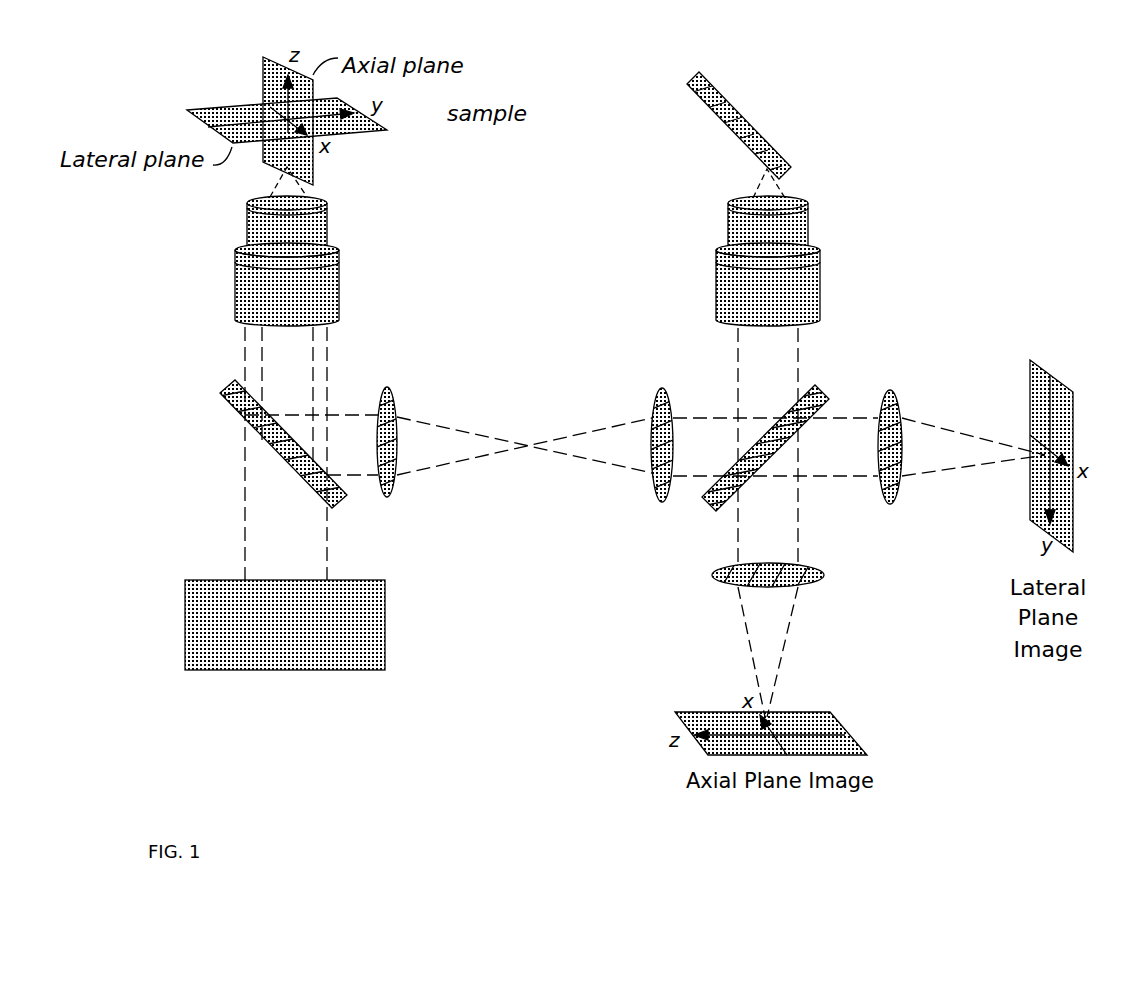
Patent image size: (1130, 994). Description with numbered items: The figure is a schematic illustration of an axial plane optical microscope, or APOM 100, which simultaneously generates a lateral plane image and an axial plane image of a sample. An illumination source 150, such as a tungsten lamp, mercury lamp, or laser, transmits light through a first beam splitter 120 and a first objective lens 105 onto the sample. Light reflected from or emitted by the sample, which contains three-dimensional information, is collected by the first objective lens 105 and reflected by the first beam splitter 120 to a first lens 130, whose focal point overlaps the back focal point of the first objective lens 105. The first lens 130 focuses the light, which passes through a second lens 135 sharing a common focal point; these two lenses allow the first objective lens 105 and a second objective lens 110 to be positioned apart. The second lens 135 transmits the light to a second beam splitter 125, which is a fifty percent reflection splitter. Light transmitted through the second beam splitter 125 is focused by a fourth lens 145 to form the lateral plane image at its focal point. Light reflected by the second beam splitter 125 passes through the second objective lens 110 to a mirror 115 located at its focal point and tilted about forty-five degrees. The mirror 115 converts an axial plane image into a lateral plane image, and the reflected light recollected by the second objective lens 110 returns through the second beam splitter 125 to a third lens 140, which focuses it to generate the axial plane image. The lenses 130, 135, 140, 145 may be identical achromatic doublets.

The axial plane optical microscope (APOM) 100 is at (969, 64).
The first objective lens 105 is at (338, 257).
The second objective lens 110 is at (822, 258).
The mirror 115 is at (723, 96).
The first beam splitter 120 is at (237, 392).
The second beam splitter 125 is at (820, 385).
The first lens 130 is at (393, 390).
The second lens 135 is at (662, 388).
The third lens 140 is at (825, 575).
The fourth lens 145 is at (892, 390).
The illumination source 150 is at (385, 627).